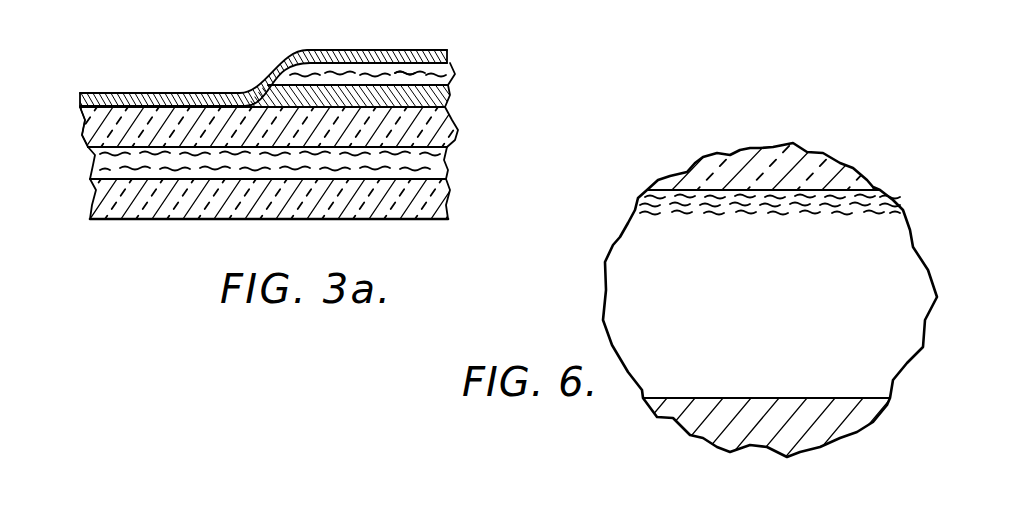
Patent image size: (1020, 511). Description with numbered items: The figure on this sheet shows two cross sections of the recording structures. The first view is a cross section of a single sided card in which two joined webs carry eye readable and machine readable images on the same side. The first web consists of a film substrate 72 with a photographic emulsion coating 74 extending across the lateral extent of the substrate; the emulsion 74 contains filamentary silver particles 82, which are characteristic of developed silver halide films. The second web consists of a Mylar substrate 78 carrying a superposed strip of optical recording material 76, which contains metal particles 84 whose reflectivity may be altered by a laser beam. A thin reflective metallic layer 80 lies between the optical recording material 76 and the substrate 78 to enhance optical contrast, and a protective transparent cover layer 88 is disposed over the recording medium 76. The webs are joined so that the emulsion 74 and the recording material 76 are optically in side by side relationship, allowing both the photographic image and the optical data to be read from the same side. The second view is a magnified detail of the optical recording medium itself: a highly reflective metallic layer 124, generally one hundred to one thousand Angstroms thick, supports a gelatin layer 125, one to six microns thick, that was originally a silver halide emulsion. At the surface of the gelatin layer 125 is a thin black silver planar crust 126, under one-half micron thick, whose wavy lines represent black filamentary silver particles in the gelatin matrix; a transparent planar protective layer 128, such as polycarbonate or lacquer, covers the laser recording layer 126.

In FIG. 3A, the film substrate 72 is at (88, 206).
In FIG. 3A, the photographic emulsion coating 74 is at (95, 172).
In FIG. 3A, the optical recording material 76 is at (450, 68).
In FIG. 3A, the Mylar substrate 78 is at (457, 127).
In FIG. 3A, the thin reflective metallic layer 80 is at (450, 94).
In FIG. 3A, the filamentary silver particles 82 is at (88, 148).
In FIG. 3A, the metal particles 84 is at (378, 77).
In FIG. 3A, the protective transparent cover layer 88 is at (160, 93).
In FIG. 6, the highly reflective metallic layer 124 is at (675, 410).
In FIG. 6, the gelatin layer 125 is at (610, 292).
In FIG. 6, the black silver planar crust 126 is at (626, 207).
In FIG. 6, the transparent planar protective layer 128 is at (715, 157).